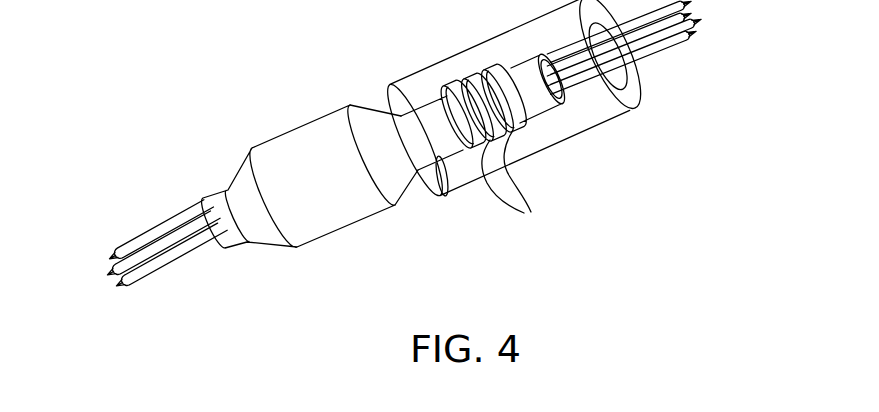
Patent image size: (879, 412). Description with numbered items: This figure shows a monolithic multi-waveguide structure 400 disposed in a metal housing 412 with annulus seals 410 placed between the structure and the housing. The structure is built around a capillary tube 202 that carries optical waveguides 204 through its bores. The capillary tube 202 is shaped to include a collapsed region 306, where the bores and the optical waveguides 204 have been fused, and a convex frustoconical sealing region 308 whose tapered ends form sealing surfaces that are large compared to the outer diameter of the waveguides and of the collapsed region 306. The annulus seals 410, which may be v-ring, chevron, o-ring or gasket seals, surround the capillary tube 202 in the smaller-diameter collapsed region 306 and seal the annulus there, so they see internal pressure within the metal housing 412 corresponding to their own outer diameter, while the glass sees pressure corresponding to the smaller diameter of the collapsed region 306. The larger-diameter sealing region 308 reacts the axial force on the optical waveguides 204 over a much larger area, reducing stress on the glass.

The cable assembly 400 is at (137, 130).
The capillary tube 202 is at (348, 229).
The optical waveguides 204 is at (670, 48).
The collapsed region 306 is at (443, 194).
The sealing region 308 is at (377, 107).
The annulus seals 410 is at (536, 213).
The metal housing 412 is at (602, 124).